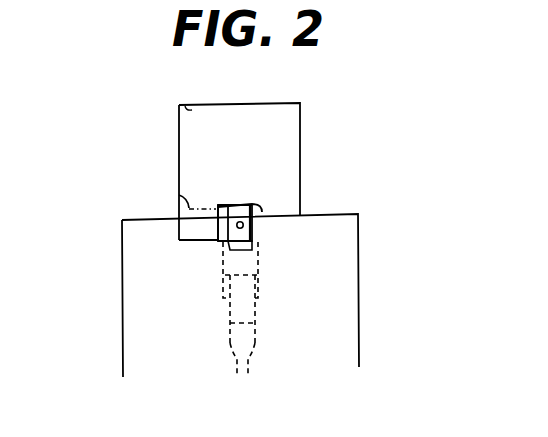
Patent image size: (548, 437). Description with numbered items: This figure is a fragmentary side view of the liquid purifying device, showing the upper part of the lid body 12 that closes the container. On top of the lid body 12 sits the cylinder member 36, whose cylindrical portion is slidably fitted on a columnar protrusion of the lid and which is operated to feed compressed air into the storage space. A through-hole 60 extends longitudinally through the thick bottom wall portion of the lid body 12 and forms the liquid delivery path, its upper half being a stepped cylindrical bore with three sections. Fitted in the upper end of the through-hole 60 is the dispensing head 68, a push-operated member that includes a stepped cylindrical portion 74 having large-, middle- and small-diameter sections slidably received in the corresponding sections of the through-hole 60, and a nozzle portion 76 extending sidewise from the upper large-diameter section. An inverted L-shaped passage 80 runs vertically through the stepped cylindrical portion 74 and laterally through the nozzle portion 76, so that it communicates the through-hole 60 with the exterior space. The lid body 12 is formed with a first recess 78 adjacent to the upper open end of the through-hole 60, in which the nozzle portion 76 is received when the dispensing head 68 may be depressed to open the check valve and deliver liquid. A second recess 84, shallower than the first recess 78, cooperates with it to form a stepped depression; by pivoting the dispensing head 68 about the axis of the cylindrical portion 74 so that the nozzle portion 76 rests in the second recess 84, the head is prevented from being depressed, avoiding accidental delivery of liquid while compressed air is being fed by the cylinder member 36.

The lid body 12 is at (378, 248).
The cylinder member 36 is at (285, 123).
The through-hole 60 is at (236, 372).
The dispensing head 68 is at (272, 200).
The stepped cylindrical portion 74 is at (218, 207).
The nozzle portion 76 is at (179, 195).
The first recess 78 is at (256, 243).
The inverted L-shaped passage 80 is at (252, 226).
The second recess 84 is at (183, 238).